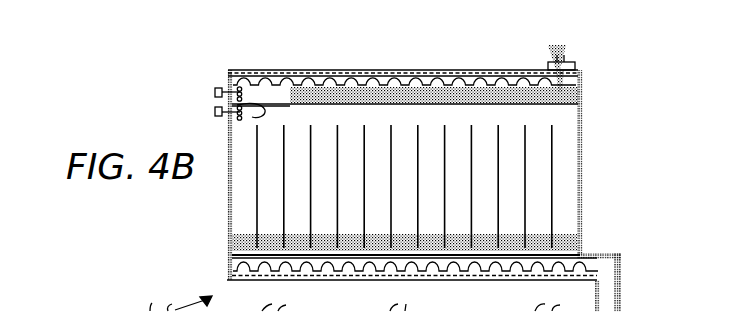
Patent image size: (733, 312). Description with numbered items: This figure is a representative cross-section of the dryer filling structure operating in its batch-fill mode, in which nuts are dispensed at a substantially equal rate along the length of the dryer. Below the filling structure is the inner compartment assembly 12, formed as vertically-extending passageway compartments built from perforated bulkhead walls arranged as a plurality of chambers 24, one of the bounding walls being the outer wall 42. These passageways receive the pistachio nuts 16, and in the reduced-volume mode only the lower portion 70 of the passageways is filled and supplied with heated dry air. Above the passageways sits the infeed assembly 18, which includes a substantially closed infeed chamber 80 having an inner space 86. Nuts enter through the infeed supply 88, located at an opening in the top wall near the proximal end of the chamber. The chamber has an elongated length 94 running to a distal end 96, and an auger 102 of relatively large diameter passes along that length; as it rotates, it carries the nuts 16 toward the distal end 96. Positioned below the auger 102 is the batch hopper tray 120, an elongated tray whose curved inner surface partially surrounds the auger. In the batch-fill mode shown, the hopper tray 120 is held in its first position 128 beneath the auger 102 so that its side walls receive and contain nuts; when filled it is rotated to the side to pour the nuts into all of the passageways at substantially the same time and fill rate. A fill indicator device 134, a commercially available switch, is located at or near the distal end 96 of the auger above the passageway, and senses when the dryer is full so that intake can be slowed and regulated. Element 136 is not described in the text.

The inner compartment assembly 12 is at (246, 198).
The pistachio nuts 16 is at (565, 95).
The infeed assembly 18 is at (592, 71).
The chambers 24 is at (540, 170).
The outer wall 42 is at (555, 50).
The lower portion 70 is at (543, 216).
The infeed chamber 80 is at (505, 63).
The inner space 86 is at (268, 78).
The infeed supply 88 is at (565, 62).
The elongated length 94 is at (383, 58).
The distal end 96 is at (241, 54).
The auger 102 is at (229, 72).
The batch hopper tray 120 is at (546, 103).
The first position 128 is at (215, 113).
The fill indicator device 134 is at (230, 118).
The electrical connector 136 is at (215, 92).